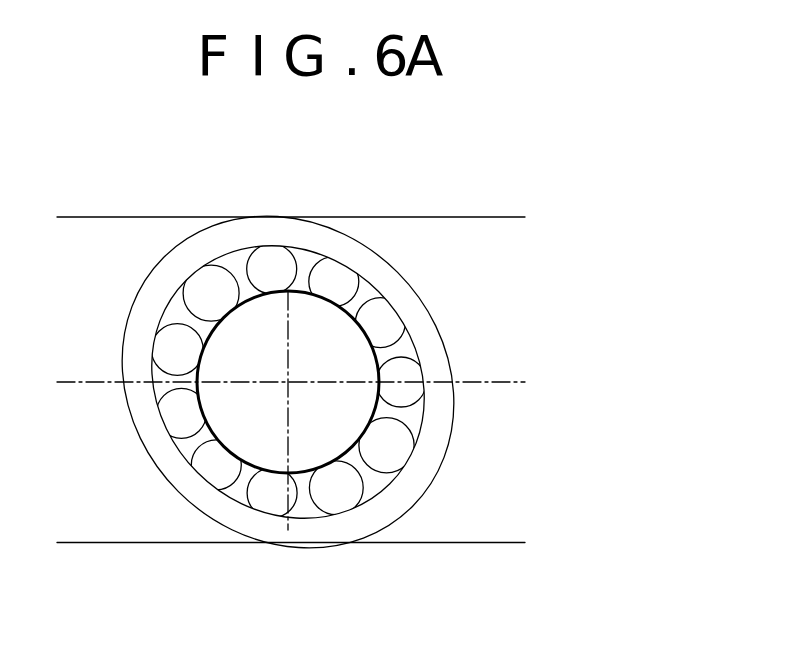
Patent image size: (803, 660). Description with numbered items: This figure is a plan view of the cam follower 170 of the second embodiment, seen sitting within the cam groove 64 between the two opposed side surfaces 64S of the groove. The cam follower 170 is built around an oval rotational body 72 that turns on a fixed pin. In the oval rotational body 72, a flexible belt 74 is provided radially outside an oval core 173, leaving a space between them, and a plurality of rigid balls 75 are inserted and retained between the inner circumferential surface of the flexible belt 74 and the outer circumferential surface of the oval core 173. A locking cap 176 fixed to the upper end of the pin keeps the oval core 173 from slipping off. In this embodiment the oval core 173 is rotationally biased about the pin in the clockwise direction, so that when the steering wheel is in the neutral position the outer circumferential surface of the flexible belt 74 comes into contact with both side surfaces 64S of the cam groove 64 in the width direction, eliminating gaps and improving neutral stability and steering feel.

The cam follower 170 is at (589, 283).
The oval rotational body 72 is at (454, 152).
The flexible belt 74 is at (403, 305).
The rigid balls 75 is at (337, 283).
The oval core 173 is at (228, 303).
The locking cap 176 is at (315, 420).
The cam groove 64 is at (471, 507).
The side surfaces of the cam groove 64S is at (111, 217).